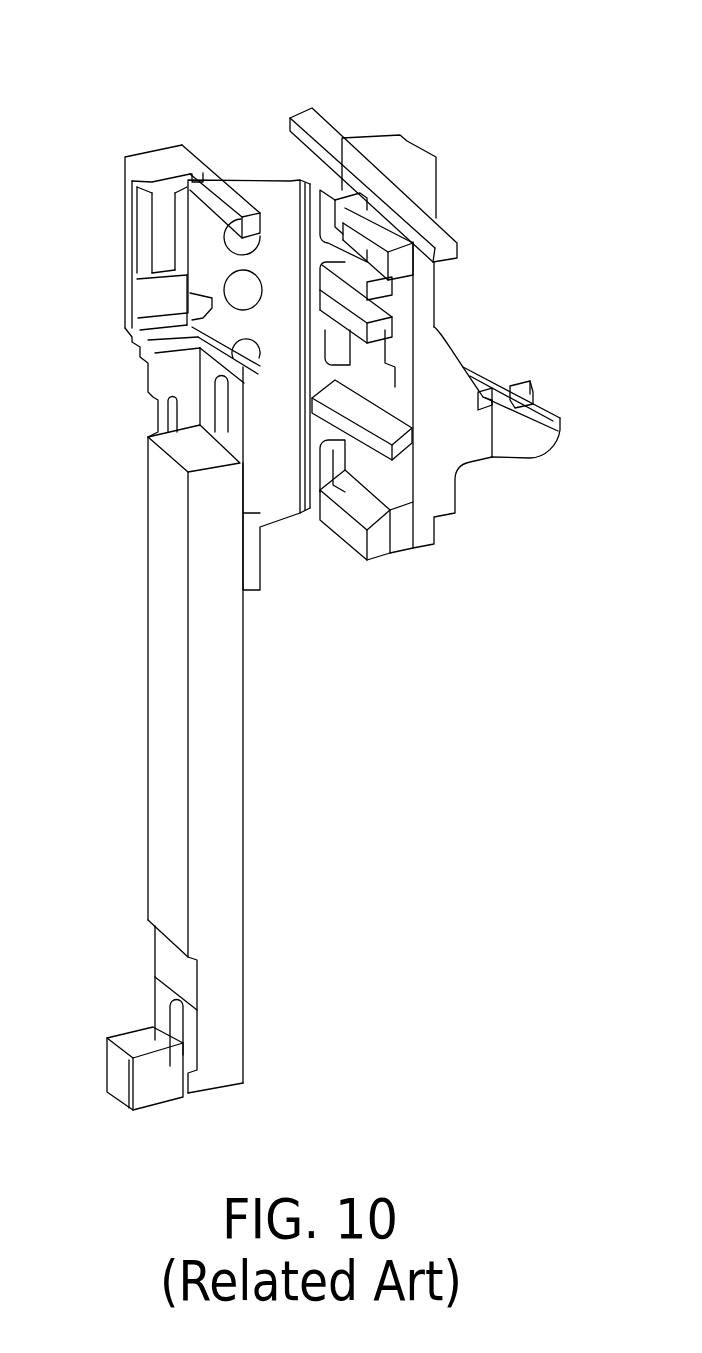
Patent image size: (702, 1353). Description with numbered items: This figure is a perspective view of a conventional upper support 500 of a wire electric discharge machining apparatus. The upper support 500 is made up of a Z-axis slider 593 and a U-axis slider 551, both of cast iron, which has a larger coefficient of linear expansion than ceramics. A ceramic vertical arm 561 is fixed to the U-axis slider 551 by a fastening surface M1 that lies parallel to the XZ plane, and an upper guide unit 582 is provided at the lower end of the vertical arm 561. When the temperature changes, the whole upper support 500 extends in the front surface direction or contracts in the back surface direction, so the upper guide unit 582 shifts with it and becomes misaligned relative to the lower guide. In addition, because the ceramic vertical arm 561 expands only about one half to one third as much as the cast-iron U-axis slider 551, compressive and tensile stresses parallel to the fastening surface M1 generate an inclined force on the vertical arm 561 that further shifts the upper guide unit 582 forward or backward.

The upper support 500 is at (298, 34).
The U-axis slider 551 is at (282, 205).
The vertical arm 561 is at (170, 640).
The upper guide unit 582 is at (133, 1038).
The Z-axis slider 593 is at (470, 438).
The fastening surface M1 is at (243, 533).